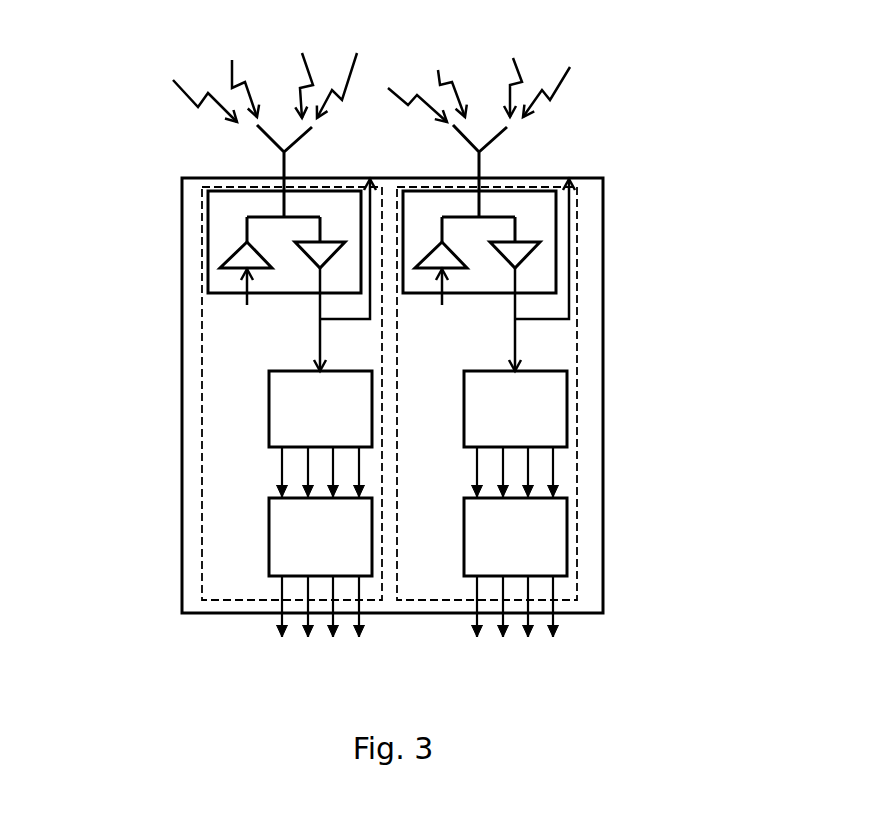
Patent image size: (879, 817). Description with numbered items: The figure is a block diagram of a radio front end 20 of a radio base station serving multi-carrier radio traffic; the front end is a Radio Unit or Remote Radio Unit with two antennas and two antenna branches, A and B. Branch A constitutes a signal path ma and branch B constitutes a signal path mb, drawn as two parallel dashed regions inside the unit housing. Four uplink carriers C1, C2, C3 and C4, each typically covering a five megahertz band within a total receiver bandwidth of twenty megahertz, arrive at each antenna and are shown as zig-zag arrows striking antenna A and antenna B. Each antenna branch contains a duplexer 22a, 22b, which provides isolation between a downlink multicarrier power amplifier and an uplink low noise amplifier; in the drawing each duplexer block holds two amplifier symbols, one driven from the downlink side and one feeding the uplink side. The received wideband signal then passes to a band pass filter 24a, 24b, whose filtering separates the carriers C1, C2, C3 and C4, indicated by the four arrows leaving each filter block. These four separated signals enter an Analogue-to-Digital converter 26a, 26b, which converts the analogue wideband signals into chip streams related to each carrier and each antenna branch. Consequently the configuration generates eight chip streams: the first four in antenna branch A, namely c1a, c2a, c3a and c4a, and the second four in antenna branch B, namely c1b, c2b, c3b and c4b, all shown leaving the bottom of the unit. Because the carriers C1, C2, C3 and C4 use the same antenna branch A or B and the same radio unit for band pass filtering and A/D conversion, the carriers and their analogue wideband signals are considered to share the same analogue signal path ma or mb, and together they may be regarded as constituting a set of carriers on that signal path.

The radio front end 20 is at (180, 315).
The signal path ma is at (217, 367).
The signal path mb is at (562, 358).
The antenna branch A is at (280, 165).
The antenna branch B is at (482, 158).
The uplink carrier C1 is at (297, 87).
The uplink carrier C2 is at (336, 68).
The uplink carrier C3 is at (404, 69).
The uplink carrier C4 is at (456, 71).
The duplexer 22a is at (205, 218).
The duplexer 22b is at (558, 243).
The band pass filter 24a is at (270, 407).
The band pass filter 24b is at (568, 412).
The Analogue-to-Digital converter 26a is at (270, 537).
The Analogue-to-Digital converter 26b is at (567, 538).
The chip stream c1a is at (277, 635).
The chip stream c2a is at (305, 638).
The chip stream c3a is at (332, 635).
The chip stream c4a is at (362, 633).
The chip stream c1b is at (470, 635).
The chip stream c2b is at (502, 637).
The chip stream c3b is at (528, 638).
The chip stream c4b is at (553, 637).